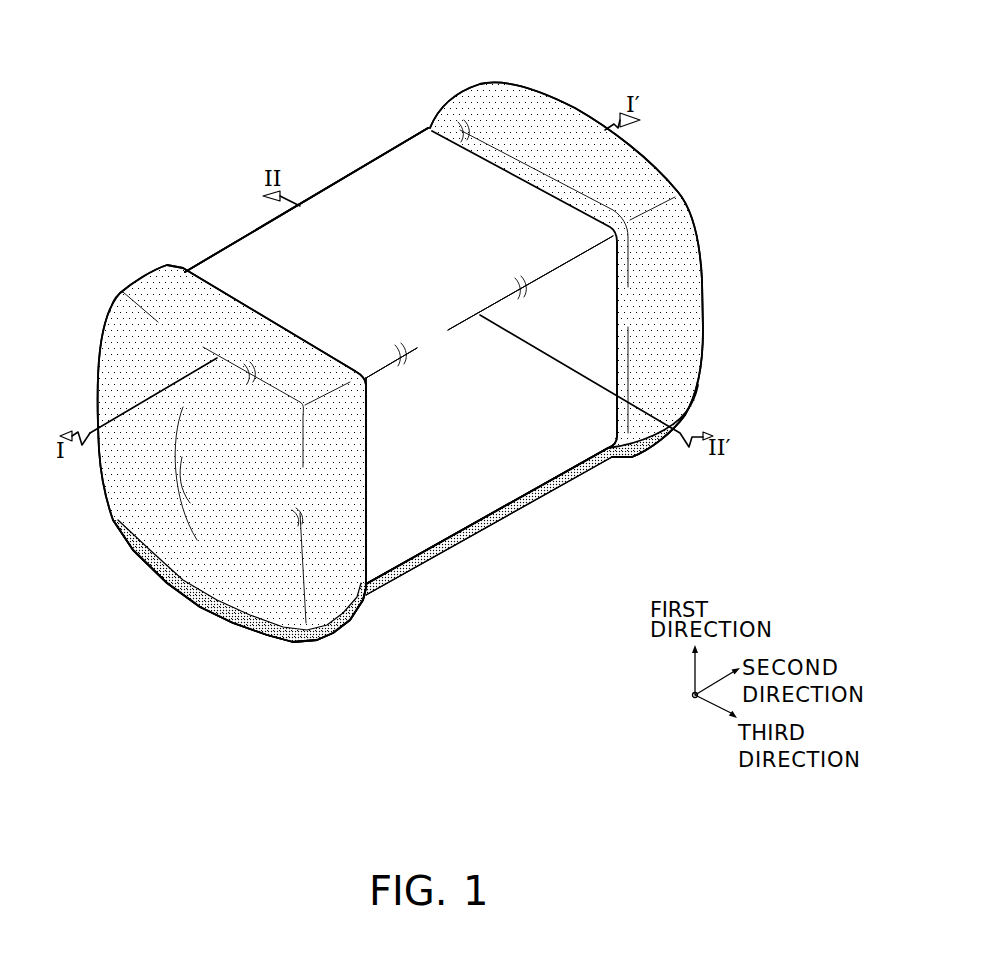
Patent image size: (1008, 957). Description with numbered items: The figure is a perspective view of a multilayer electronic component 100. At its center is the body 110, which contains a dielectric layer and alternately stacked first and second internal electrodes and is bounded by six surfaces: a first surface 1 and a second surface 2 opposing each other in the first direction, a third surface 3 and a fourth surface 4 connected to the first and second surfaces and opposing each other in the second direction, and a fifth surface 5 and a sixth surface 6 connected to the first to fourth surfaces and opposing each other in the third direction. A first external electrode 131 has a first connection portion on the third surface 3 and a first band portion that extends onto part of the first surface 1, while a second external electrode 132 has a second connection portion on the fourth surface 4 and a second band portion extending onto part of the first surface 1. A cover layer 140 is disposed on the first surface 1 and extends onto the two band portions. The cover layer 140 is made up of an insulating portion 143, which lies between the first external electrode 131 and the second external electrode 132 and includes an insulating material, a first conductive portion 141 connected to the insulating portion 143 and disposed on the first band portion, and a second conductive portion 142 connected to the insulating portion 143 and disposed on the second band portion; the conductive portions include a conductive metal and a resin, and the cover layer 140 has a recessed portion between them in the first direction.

The multilayer electronic component 100 is at (280, 21).
The body 110 is at (357, 183).
The first surface 1 is at (465, 533).
The second surface 2 is at (410, 158).
The third surface 3 is at (143, 512).
The fourth surface 4 is at (541, 104).
The fifth surface 5 is at (240, 237).
The sixth surface 6 is at (542, 465).
The first external electrode 131 is at (146, 276).
The second external electrode 132 is at (473, 94).
The cover layer 140 is at (553, 697).
The first conductive portion 141 is at (347, 617).
The second conductive portion 142 is at (642, 453).
The insulating portion 143 is at (433, 558).